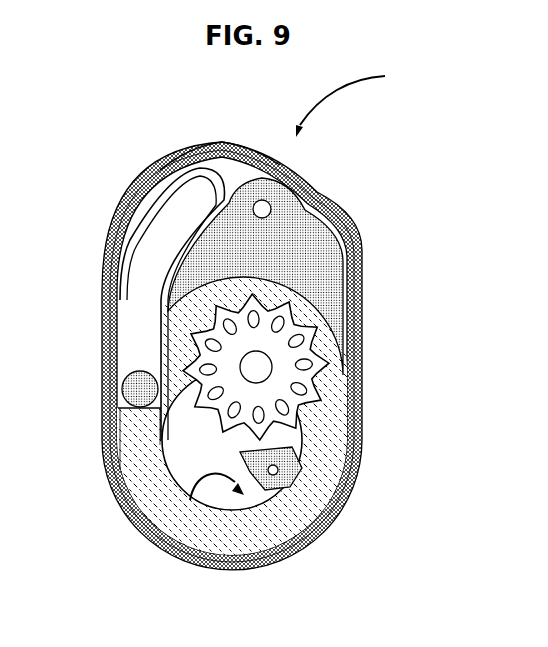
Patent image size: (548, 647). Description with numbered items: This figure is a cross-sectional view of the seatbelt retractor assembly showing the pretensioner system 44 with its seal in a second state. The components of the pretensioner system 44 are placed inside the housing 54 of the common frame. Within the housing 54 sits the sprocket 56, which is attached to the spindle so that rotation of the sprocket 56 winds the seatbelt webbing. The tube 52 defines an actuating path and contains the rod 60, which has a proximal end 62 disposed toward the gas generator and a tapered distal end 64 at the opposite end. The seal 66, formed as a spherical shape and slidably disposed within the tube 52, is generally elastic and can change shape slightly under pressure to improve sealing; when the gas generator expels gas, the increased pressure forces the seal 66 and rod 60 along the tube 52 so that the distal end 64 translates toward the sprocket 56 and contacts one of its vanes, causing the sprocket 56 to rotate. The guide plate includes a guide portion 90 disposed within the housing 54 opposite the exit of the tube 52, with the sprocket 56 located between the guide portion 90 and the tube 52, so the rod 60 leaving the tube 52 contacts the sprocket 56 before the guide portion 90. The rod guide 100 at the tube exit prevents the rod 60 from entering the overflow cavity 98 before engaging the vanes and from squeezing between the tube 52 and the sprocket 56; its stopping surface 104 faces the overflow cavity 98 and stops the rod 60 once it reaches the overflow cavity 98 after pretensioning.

The pretensioner system 44 is at (360, 102).
The tube 52 is at (113, 312).
The housing 54 is at (190, 160).
The sprocket 56 is at (283, 375).
The rod 60 is at (153, 500).
The proximal end 62 is at (138, 416).
The distal end 64 is at (190, 398).
The seal 66 is at (123, 385).
The guide portion 90 is at (300, 230).
The overflow cavity 98 is at (205, 481).
The rod guide 100 is at (286, 470).
The stopping surface 104 is at (262, 483).